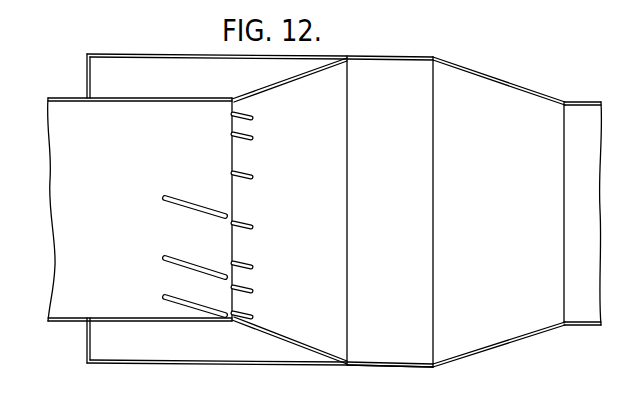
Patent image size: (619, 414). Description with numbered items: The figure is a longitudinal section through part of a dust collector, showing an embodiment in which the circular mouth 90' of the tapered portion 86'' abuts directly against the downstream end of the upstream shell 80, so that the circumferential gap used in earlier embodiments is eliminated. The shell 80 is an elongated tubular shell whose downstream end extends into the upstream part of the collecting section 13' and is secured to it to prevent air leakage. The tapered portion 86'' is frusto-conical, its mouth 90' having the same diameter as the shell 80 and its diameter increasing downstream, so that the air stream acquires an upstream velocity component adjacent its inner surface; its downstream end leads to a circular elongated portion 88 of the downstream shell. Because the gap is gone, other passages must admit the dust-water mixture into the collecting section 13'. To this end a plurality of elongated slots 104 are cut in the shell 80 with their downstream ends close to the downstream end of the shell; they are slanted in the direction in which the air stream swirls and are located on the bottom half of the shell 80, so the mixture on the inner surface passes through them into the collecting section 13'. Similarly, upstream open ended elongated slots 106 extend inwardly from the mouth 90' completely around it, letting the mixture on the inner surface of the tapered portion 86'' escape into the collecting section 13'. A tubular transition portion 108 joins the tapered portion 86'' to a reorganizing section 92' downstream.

The collecting section 13' is at (315, 226).
The upstream shell 80 is at (66, 316).
The circular elongated portion 88 is at (586, 101).
The circular mouth 90' is at (262, 145).
The reorganizing section 92' is at (499, 93).
The tapered portion 86'' is at (289, 335).
The elongated slots 104 is at (198, 209).
The upstream open ended elongated slots 106 is at (240, 228).
The tubular transition portion 108 is at (393, 368).